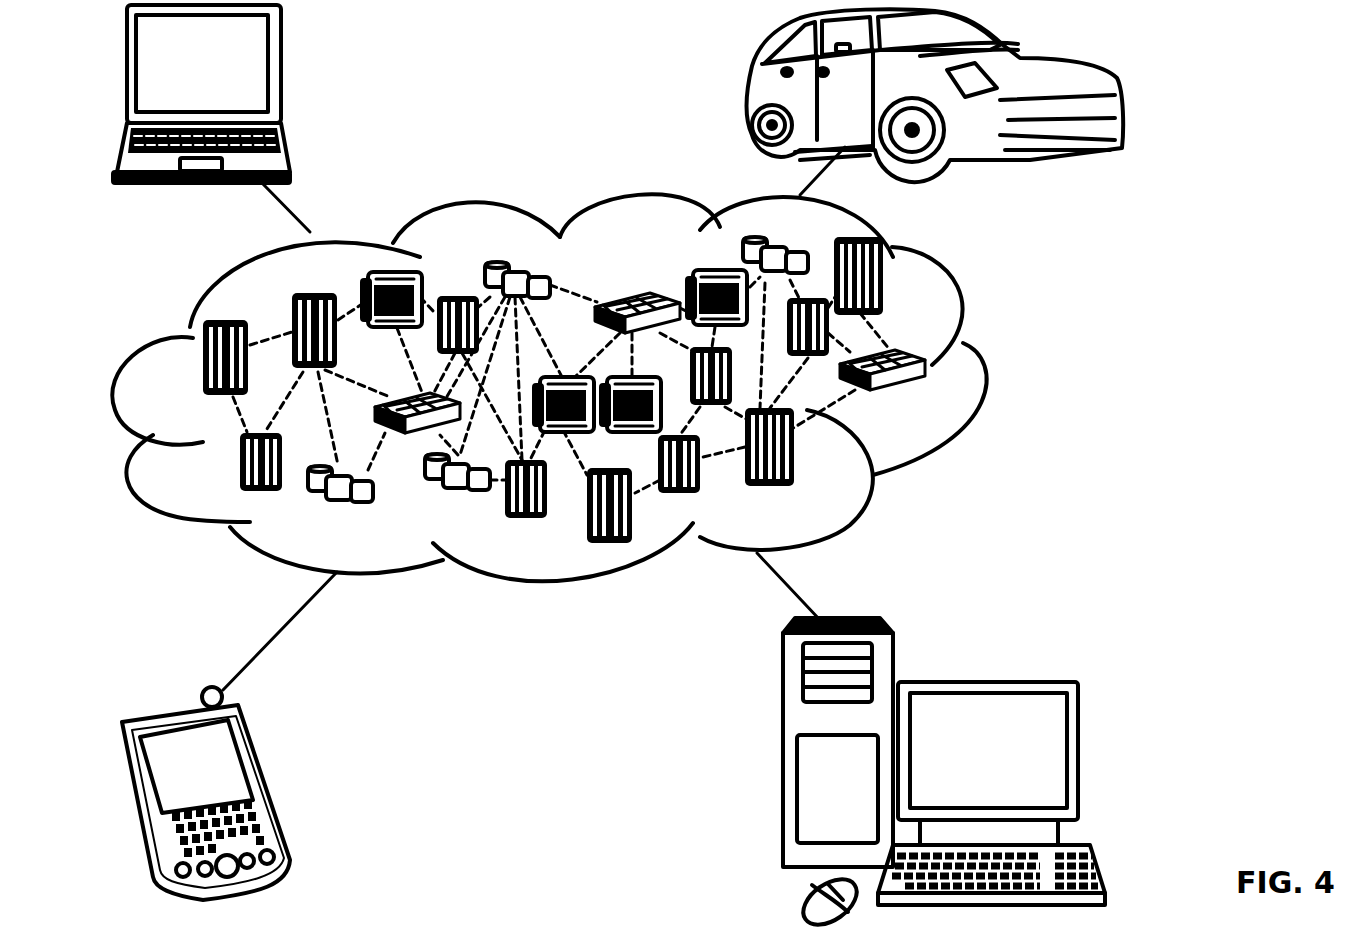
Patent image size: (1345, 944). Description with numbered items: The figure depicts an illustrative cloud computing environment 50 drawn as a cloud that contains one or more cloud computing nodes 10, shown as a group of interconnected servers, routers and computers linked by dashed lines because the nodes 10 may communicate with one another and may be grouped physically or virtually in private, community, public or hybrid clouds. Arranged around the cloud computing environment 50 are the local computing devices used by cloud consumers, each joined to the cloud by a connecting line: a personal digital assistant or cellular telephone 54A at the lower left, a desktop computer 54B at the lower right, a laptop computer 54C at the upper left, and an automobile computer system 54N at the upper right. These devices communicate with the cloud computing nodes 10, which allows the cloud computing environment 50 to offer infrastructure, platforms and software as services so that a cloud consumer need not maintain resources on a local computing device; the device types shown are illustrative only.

The cloud computing nodes 10 is at (619, 390).
The cloud computing environment 50 is at (987, 367).
The personal digital assistant (PDA) or cellular telephone 54A is at (268, 782).
The desktop computer 54B is at (987, 680).
The laptop computer 54C is at (281, 68).
The automobile computer system 54N is at (748, 90).